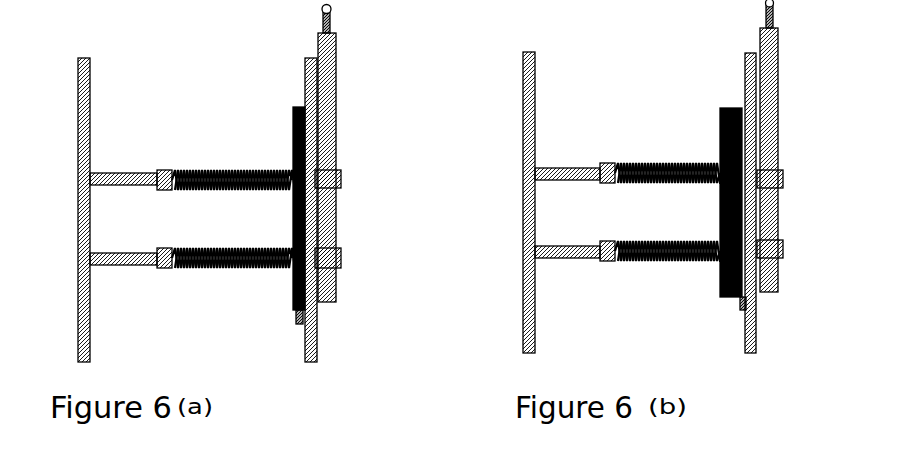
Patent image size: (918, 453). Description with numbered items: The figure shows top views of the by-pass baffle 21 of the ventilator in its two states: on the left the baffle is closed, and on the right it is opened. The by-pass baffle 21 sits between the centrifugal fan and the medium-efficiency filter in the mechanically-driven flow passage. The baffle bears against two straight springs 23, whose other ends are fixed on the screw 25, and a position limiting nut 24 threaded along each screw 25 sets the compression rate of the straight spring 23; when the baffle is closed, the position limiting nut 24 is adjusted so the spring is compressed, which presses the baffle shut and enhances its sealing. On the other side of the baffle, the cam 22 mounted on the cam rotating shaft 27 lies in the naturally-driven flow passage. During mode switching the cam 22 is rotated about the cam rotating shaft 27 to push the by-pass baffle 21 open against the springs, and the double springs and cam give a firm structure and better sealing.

In FIG. 6B, the by-pass baffle 21 is at (733, 127).
In FIG. 6B, the cam 22 is at (770, 252).
In FIG. 6A, the straight spring 23 is at (217, 254).
In FIG. 6A, the position limiting nut 24 is at (166, 180).
In FIG. 6A, the screw 25 is at (105, 181).
In FIG. 6B, the cam rotating shaft 27 is at (770, 110).